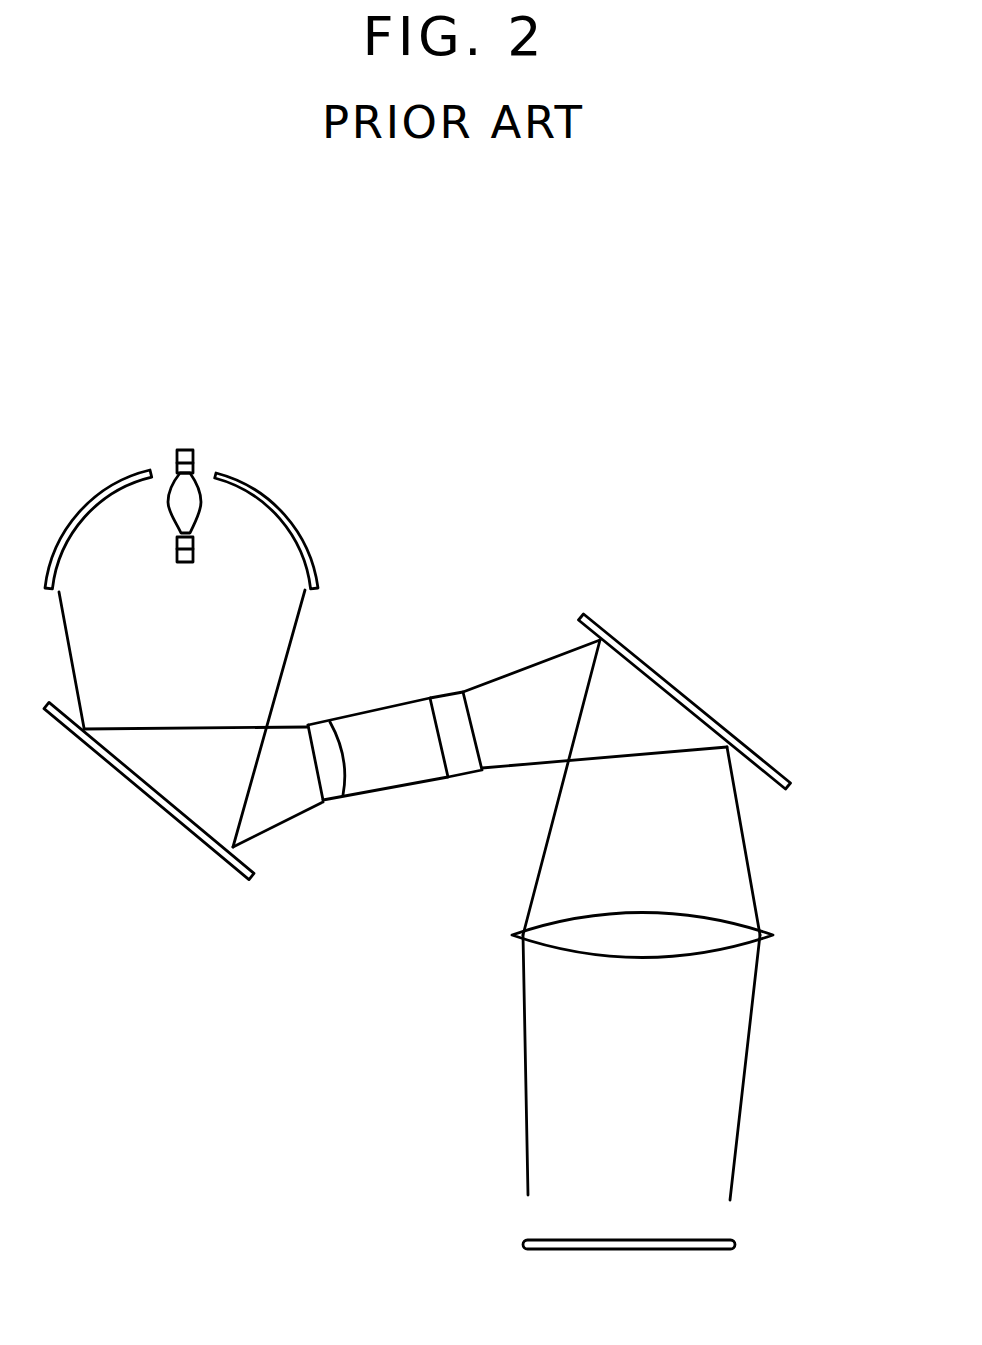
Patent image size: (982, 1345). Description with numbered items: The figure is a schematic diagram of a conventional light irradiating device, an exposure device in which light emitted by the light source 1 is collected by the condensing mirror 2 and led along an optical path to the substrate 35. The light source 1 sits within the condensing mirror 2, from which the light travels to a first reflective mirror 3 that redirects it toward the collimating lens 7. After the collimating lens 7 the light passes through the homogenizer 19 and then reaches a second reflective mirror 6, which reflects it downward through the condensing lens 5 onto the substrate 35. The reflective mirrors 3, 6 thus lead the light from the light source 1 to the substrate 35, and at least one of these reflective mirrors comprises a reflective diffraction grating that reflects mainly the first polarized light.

The light source 1 is at (183, 450).
The condensing mirror 2 is at (230, 500).
The reflective mirror 3 is at (140, 793).
The collimating lens 7 is at (333, 795).
The homogenizer 19 is at (463, 765).
The reflective mirror 6 is at (670, 683).
The condensing lens 5 is at (773, 935).
The substrate 35 is at (733, 1247).